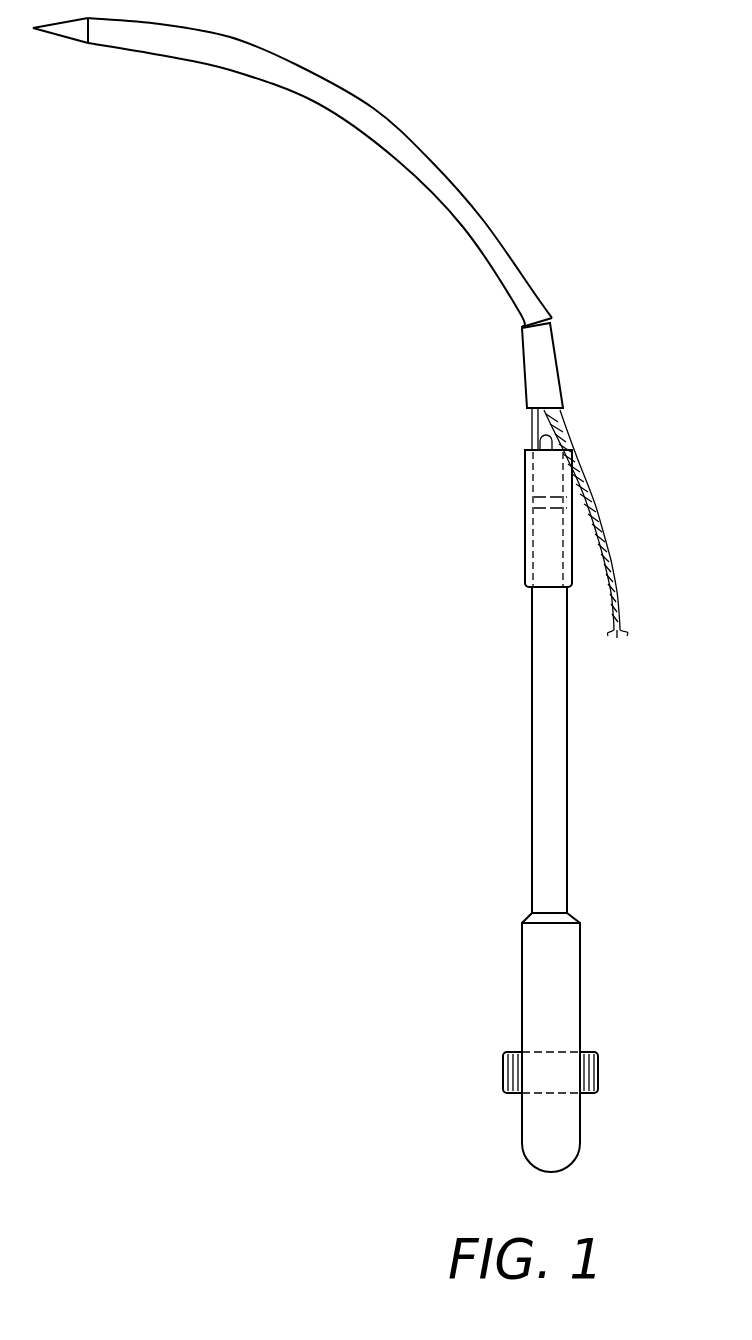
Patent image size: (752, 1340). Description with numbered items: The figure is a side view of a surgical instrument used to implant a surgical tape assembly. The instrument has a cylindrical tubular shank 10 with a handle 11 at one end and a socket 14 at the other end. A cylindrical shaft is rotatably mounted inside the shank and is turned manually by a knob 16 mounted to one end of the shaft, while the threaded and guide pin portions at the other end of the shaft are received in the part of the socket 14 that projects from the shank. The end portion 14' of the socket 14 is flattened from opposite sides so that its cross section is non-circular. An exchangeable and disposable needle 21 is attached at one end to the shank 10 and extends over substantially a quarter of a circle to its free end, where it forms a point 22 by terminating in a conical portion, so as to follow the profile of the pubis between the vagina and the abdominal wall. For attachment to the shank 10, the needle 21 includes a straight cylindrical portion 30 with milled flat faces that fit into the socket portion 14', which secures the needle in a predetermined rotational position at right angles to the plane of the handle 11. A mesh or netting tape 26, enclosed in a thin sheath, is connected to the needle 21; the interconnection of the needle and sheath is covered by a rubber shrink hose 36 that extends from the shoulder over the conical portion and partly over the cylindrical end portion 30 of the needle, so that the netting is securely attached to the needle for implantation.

The cylindrical tubular shank 10 is at (543, 758).
The handle 11 is at (512, 972).
The socket 14 is at (499, 518).
The end portion of socket 14' is at (495, 498).
The knob 16 is at (505, 1063).
The needle 21 is at (322, 100).
The point 22 is at (72, 32).
The tape 26 is at (562, 435).
The straight portion of needle 30 is at (538, 428).
The rubber shrink hose 36 is at (532, 375).